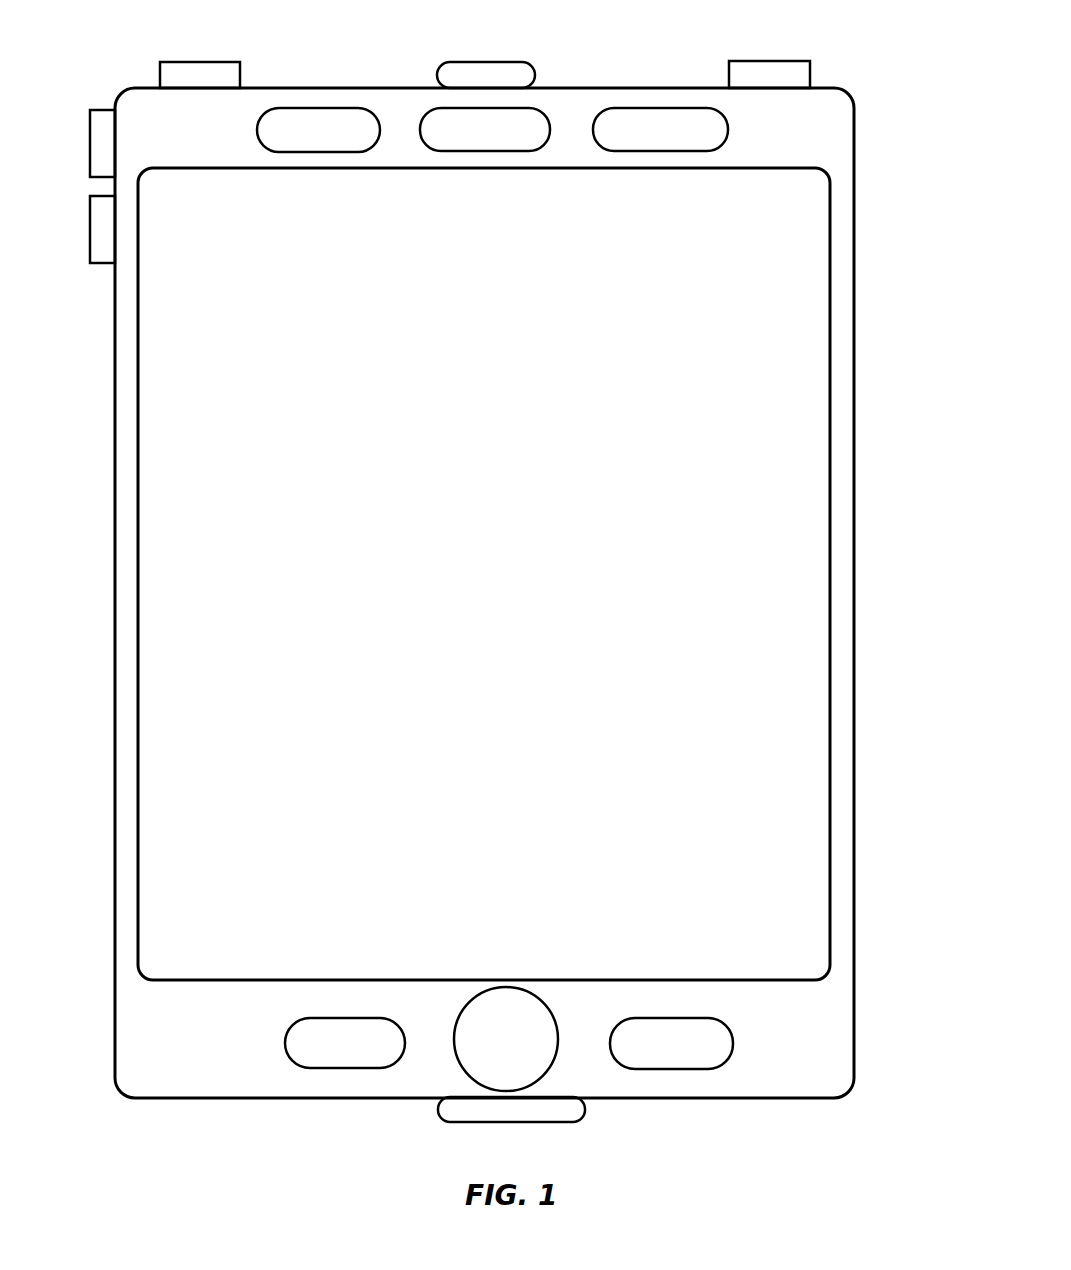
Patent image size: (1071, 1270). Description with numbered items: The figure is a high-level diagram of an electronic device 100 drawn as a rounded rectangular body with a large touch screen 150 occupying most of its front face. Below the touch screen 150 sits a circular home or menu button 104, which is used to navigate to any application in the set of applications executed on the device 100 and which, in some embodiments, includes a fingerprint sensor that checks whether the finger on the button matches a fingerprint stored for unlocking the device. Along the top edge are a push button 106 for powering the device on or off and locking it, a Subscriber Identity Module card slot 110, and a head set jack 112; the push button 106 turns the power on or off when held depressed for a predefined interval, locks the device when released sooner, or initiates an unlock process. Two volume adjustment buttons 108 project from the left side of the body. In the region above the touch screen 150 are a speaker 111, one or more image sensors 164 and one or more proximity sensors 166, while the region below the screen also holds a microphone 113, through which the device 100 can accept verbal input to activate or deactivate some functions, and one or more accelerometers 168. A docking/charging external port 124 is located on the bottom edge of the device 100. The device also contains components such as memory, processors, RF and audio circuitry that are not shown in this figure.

The electronic device 100 is at (889, 86).
The menu button 104 is at (506, 1039).
The push button 106 is at (200, 75).
The volume adjustment buttons 108 is at (102, 143).
The Subscriber Identity Module (SIM) card slot 110 is at (486, 75).
The speaker 111 is at (318, 130).
The head set jack 112 is at (769, 74).
The microphone 113 is at (345, 1043).
The docking/charging external port 124 is at (511, 1109).
The touch screen 150 is at (834, 466).
The image sensors 164 is at (485, 129).
The proximity sensors 166 is at (660, 129).
The accelerometers 168 is at (671, 1043).